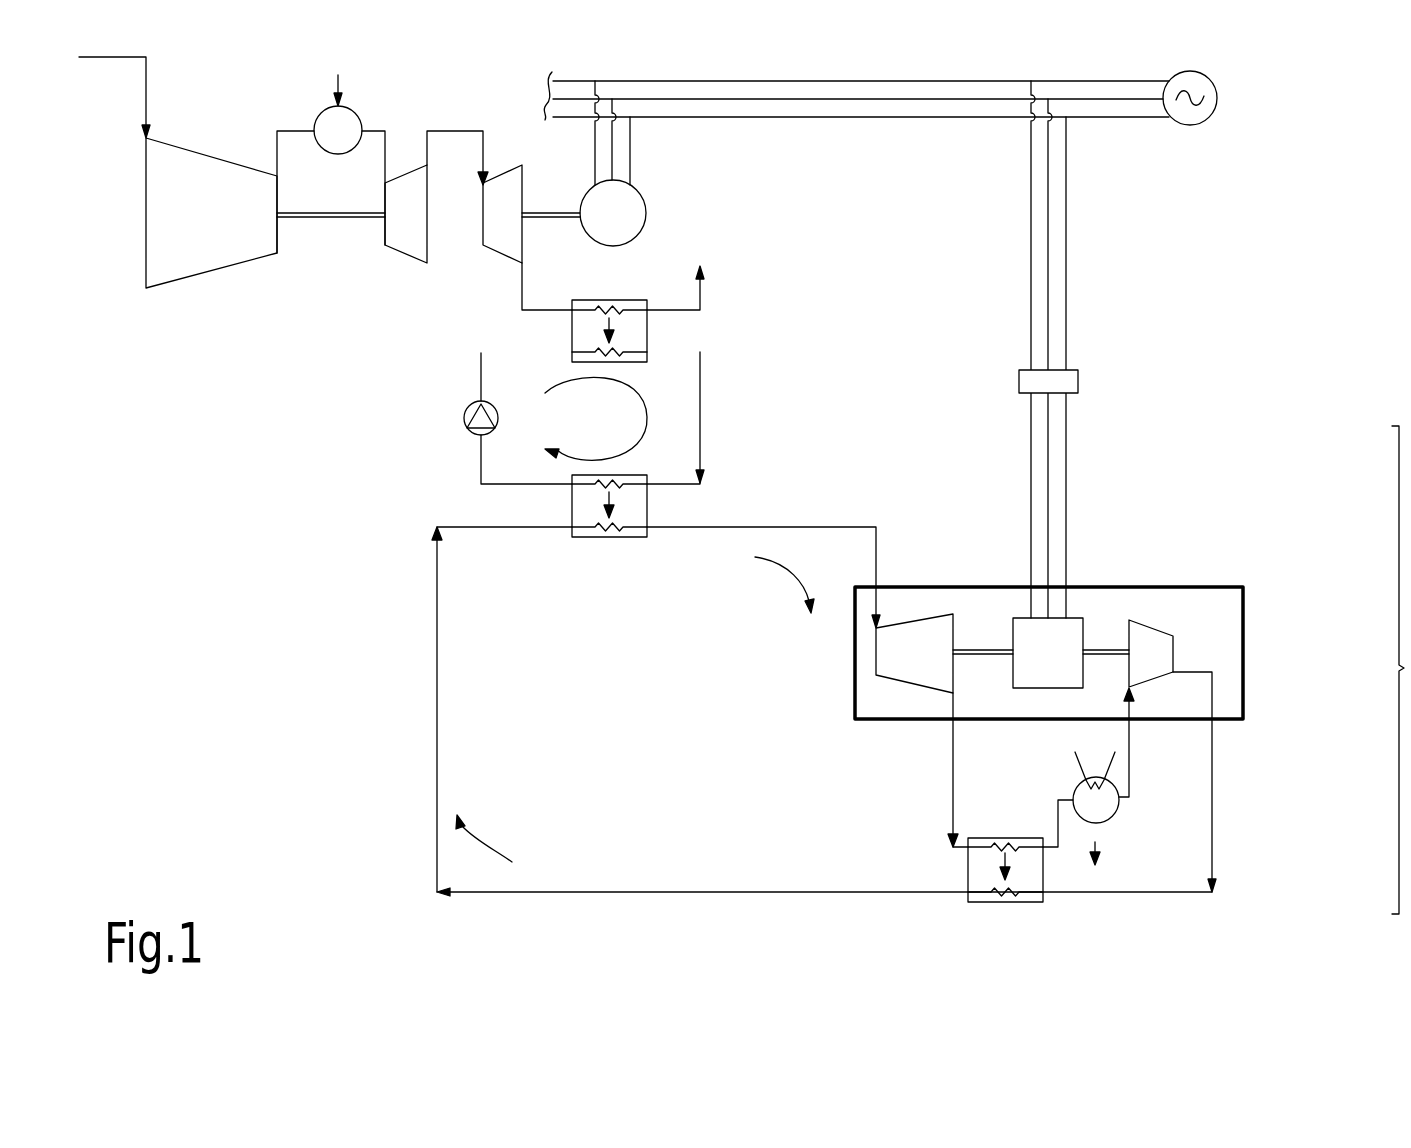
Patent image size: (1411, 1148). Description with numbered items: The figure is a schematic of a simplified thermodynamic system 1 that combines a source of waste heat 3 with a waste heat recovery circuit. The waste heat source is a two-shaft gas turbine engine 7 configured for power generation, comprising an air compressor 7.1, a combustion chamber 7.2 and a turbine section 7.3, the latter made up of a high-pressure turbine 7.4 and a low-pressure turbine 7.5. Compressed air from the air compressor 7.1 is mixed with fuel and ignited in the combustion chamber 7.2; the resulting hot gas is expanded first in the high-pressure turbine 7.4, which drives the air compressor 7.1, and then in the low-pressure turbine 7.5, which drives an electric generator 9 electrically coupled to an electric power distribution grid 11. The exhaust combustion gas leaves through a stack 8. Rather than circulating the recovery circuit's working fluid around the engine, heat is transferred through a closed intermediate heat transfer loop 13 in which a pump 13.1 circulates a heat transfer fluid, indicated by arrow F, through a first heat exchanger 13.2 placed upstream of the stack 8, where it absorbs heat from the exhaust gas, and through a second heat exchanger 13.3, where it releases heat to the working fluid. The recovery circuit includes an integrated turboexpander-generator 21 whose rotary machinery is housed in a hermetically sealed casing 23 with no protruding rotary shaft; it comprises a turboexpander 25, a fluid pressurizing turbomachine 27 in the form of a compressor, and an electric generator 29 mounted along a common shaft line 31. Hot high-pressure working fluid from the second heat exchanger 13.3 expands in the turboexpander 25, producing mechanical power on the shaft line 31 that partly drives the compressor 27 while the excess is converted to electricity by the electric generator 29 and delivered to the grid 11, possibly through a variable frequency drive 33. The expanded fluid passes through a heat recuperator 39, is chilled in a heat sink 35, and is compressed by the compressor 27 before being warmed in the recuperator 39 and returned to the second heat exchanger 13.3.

The thermodynamic system 1 is at (196, 556).
The source of waste heat 3 is at (747, 150).
The gas turbine engine 7 is at (231, 318).
The air compressor 7.1 is at (165, 273).
The combustion chamber 7.2 is at (317, 123).
The turbine section 7.3 is at (388, 117).
The high-pressure turbine 7.4 is at (400, 240).
The low-pressure turbine 7.5 is at (498, 235).
The stack 8 is at (692, 290).
The electric generator 9 is at (633, 212).
The electric power distribution grid 11 is at (845, 117).
The intermediate heat transfer loop 13 is at (455, 455).
The pump 13.1 is at (470, 405).
The first heat exchanger 13.2 is at (647, 322).
The second heat exchanger 13.3 is at (647, 494).
The heat transfer fluid flow F is at (643, 412).
The integrated turboexpander-generator 21 is at (1094, 663).
The hermetically sealed casing 23 is at (1244, 705).
The turboexpander 25 is at (902, 668).
The fluid pressurizing turbomachine 27 is at (1155, 668).
The electric generator 29 is at (1058, 680).
The common shaft line 31 is at (983, 648).
The variable frequency drive 33 is at (1078, 381).
The heat sink 35 is at (1110, 818).
The heat recuperator 39 is at (1005, 902).